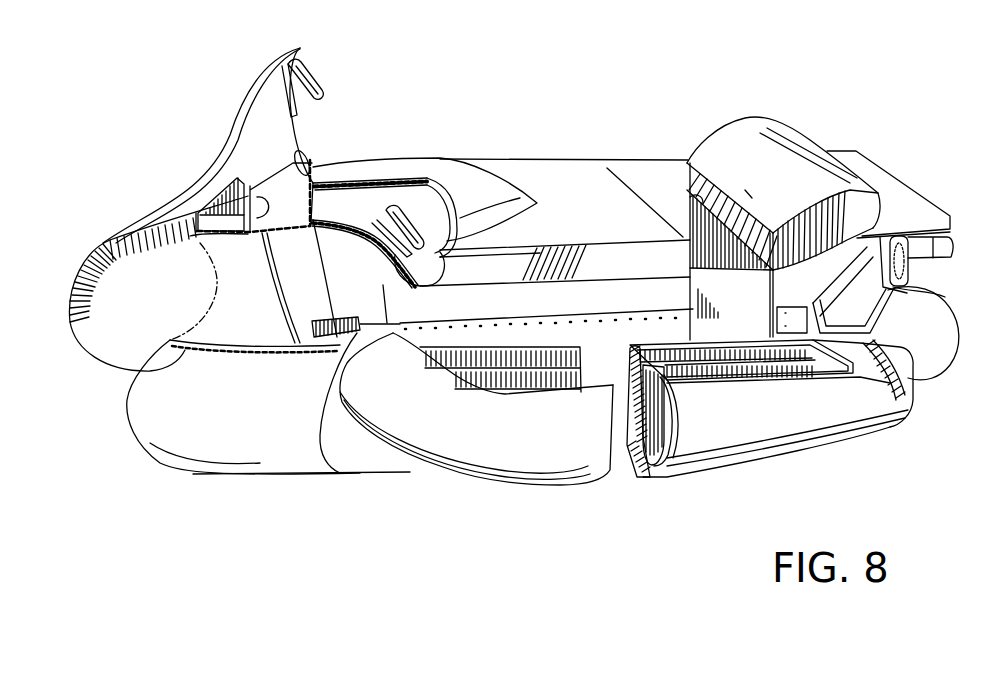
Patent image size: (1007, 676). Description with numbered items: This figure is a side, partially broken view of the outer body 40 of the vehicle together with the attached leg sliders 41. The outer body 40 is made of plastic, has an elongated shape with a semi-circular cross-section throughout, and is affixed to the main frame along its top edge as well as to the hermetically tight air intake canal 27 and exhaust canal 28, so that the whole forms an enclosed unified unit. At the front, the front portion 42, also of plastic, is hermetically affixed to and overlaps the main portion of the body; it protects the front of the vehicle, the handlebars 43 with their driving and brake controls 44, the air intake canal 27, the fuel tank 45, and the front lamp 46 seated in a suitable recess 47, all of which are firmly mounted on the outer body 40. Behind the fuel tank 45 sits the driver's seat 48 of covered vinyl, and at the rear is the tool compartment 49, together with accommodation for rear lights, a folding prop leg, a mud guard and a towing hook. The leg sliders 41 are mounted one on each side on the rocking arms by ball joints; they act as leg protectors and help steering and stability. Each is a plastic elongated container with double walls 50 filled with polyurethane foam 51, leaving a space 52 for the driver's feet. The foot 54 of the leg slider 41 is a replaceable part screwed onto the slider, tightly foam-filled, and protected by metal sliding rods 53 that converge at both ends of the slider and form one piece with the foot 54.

The air intake canal 27 is at (318, 338).
The exhaust canal 28 is at (917, 262).
The outer body 40 is at (580, 300).
The leg sliders 41 is at (423, 433).
The front portion 42 is at (248, 140).
The handlebars 43 is at (300, 92).
The driving and brake controls 44 is at (296, 101).
The fuel tank 45 is at (372, 168).
The front lamp 46 is at (247, 210).
The recess 47 is at (217, 233).
The driver's seat 48 is at (543, 180).
The tool compartment 49 is at (867, 168).
The double walls 50 is at (690, 435).
The polyurethane foam 51 is at (897, 377).
The space 52 is at (690, 445).
The metal sliding rods 53 is at (628, 455).
The foot 54 is at (838, 450).